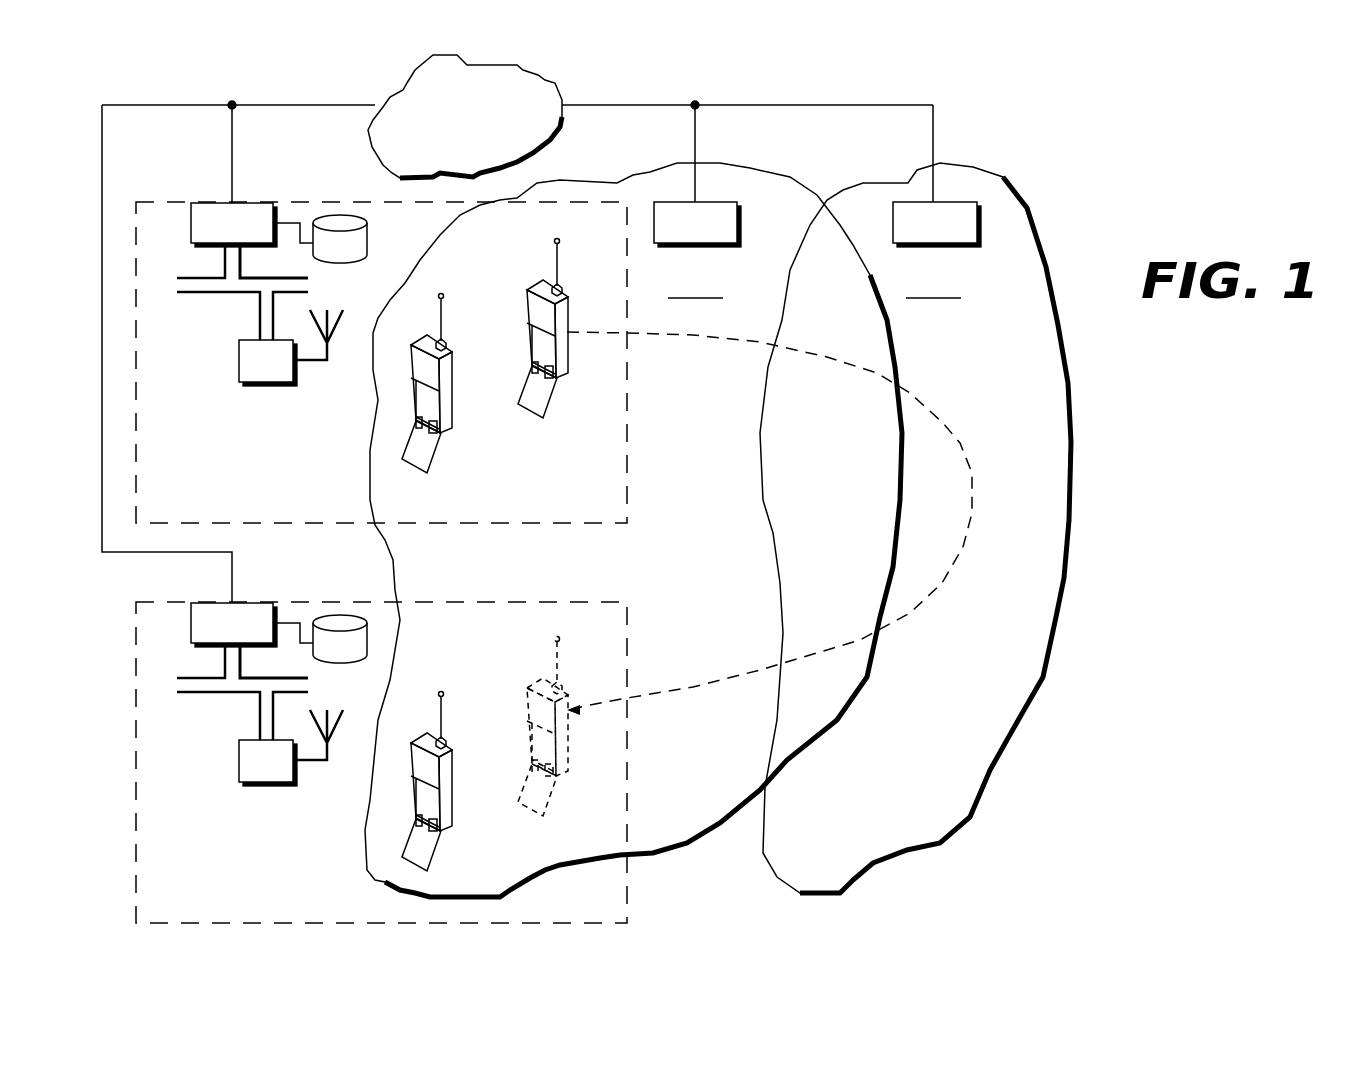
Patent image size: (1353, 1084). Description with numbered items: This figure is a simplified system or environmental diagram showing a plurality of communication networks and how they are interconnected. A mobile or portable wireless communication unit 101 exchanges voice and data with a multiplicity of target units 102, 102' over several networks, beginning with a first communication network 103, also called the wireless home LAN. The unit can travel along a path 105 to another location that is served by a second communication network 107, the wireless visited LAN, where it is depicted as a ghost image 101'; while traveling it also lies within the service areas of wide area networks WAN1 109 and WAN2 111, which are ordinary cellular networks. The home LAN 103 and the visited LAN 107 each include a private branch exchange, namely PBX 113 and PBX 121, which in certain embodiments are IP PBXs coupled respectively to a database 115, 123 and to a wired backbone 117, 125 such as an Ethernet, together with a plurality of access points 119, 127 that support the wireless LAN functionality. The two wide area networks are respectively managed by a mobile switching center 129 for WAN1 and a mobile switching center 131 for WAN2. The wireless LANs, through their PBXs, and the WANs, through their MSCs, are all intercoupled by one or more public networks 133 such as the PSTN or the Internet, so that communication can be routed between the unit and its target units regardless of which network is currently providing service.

The wireless communication unit 101 is at (526, 329).
The ghost image of the wireless communication unit 101' is at (525, 727).
The target unit 102 is at (456, 384).
The target unit 102' is at (458, 782).
The first communication network 103 is at (338, 198).
The path 105 is at (958, 558).
The second communication network 107 is at (516, 602).
The WAN1 109 is at (757, 168).
The WAN2 111 is at (1034, 205).
The private branch exchange 113 is at (204, 244).
The database 115 is at (313, 257).
The wired backbone 117 is at (205, 294).
The access points 119 is at (250, 340).
The private branch exchange 121 is at (204, 644).
The database 123 is at (313, 657).
The wired backbone 125 is at (198, 694).
The access points 127 is at (250, 740).
The mobile switching center 129 is at (742, 221).
The mobile switching center 131 is at (981, 228).
The public network 133 is at (405, 85).